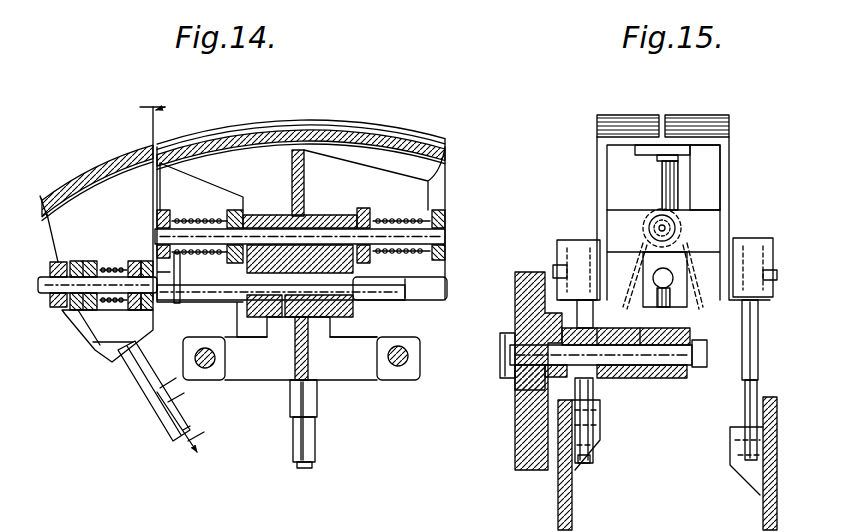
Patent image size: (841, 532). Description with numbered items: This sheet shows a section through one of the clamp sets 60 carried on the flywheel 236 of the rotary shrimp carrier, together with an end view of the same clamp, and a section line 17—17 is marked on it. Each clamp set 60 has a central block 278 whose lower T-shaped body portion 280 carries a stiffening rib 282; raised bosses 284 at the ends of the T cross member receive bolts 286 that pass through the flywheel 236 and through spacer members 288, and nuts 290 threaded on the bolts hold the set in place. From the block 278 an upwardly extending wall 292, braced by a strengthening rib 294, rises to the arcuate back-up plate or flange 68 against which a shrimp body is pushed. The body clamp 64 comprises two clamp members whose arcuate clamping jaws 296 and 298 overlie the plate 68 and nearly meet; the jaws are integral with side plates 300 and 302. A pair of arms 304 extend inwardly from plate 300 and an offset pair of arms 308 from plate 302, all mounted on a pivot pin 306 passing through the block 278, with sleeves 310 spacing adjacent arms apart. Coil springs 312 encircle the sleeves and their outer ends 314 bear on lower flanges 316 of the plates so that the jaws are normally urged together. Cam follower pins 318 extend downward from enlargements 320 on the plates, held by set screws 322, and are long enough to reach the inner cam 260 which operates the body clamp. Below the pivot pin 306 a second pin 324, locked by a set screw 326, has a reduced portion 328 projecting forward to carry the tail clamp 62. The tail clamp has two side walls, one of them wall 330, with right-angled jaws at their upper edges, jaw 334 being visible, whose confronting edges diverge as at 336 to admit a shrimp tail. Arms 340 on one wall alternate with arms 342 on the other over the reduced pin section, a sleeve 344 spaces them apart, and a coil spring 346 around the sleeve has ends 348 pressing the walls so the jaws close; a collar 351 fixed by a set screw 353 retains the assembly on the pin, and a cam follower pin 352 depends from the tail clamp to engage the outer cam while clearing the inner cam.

In FIG. 14, the section line 17- 17 is at (188, 277).
In FIG. 14, the clamp set 60 is at (146, 127).
In FIG. 15, the clamp set 60 is at (689, 110).
In FIG. 14, the tail clamp 62 is at (73, 172).
In FIG. 14, the body clamp 64 is at (449, 160).
In FIG. 15, the body clamp 64 is at (736, 160).
In FIG. 14, the back-up plate 68 is at (292, 148).
In FIG. 15, the back-up plate 68 is at (648, 147).
In FIG. 15, the flywheel 236 is at (523, 443).
In FIG. 15, the inner cam portion 260 is at (600, 432).
In FIG. 14, the central block 278 is at (314, 231).
In FIG. 15, the central block 278 is at (675, 262).
In FIG. 14, the T-shaped body portion 280 is at (352, 367).
In FIG. 15, the T-shaped body portion 280 is at (692, 352).
In FIG. 14, the stiffening rib 282 is at (365, 370).
In FIG. 15, the stiffening rib 282 is at (683, 318).
In FIG. 14, the raised bosses 284 is at (222, 360).
In FIG. 15, the raised bosses 284 is at (667, 380).
In FIG. 14, the bolts 286 is at (204, 370).
In FIG. 15, the bolts 286 is at (612, 360).
In FIG. 15, the spacer members 288 is at (597, 328).
In FIG. 15, the nuts 290 is at (705, 368).
In FIG. 14, the upwardly extending wall 292 is at (392, 138).
In FIG. 15, the upwardly extending wall 292 is at (700, 160).
In FIG. 14, the strengthening rib 294 is at (305, 150).
In FIG. 15, the strengthening rib 294 is at (729, 134).
In FIG. 15, the clamping jaw 296 is at (597, 128).
In FIG. 14, the clamping jaw 298 is at (366, 123).
In FIG. 15, the clamping jaw 298 is at (700, 118).
In FIG. 15, the side plate 300 is at (606, 157).
In FIG. 14, the side plate 302 is at (438, 175).
In FIG. 15, the side plate 302 is at (742, 170).
In FIG. 14, the arms 304 is at (236, 212).
In FIG. 15, the arms 304 is at (628, 205).
In FIG. 14, the pivot pin 306 is at (432, 224).
In FIG. 15, the pivot pin 306 is at (702, 164).
In FIG. 14, the arms 308 is at (165, 212).
In FIG. 15, the arms 308 is at (725, 196).
In FIG. 14, the sleeves 310 is at (200, 216).
In FIG. 14, the coil springs 312 is at (410, 204).
In FIG. 15, the coil springs 312 is at (636, 212).
In FIG. 14, the spring outer ends 314 is at (134, 261).
In FIG. 15, the spring outer ends 314 is at (620, 278).
In FIG. 14, the lower flanges 316 is at (430, 292).
In FIG. 15, the lower flanges 316 is at (616, 282).
In FIG. 14, the cam follower pins 318 is at (297, 405).
In FIG. 15, the cam follower pins 318 is at (576, 405).
In FIG. 15, the enlargements 320 is at (557, 243).
In FIG. 15, the set screws 322 is at (553, 272).
In FIG. 14, the pin 324 is at (296, 365).
In FIG. 15, the set screw 326 is at (638, 378).
In FIG. 14, the reduced pin portion 328 is at (52, 266).
In FIG. 14, the side wall 330 is at (48, 224).
In FIG. 14, the jaw 334 is at (97, 168).
In FIG. 14, the diverging jaw portion 336 is at (50, 196).
In FIG. 14, the arms 340 is at (88, 314).
In FIG. 14, the arms 342 is at (73, 310).
In FIG. 14, the sleeve 344 is at (90, 270).
In FIG. 14, the coil spring 346 is at (102, 266).
In FIG. 14, the spring ends 348 is at (96, 328).
In FIG. 14, the collar 351 is at (50, 293).
In FIG. 14, the cam follower pins 352 is at (168, 398).
In FIG. 14, the set screw 353 is at (62, 308).